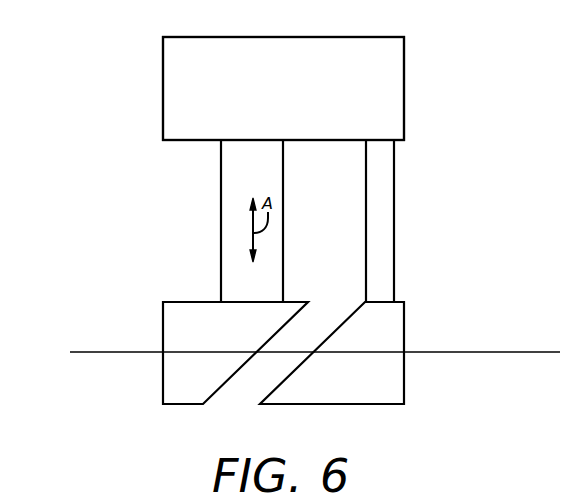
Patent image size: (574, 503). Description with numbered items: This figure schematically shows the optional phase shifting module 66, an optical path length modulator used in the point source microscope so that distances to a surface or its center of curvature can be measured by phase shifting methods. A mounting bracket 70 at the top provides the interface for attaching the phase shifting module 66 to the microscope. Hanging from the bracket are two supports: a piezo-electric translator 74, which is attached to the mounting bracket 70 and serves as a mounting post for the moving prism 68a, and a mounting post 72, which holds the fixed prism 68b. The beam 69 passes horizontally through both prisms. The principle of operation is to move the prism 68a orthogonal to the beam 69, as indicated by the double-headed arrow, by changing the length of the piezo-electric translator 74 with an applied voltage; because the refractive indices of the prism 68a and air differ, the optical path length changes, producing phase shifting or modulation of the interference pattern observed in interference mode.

The phase shifting module 66 is at (95, 82).
The mounting bracket 70 is at (404, 70).
The piezo-electric translator 74 is at (235, 227).
The mounting post 72 is at (384, 227).
The moving prism 68a is at (188, 318).
The fixed prism 68b is at (392, 320).
The beam 69 is at (115, 354).